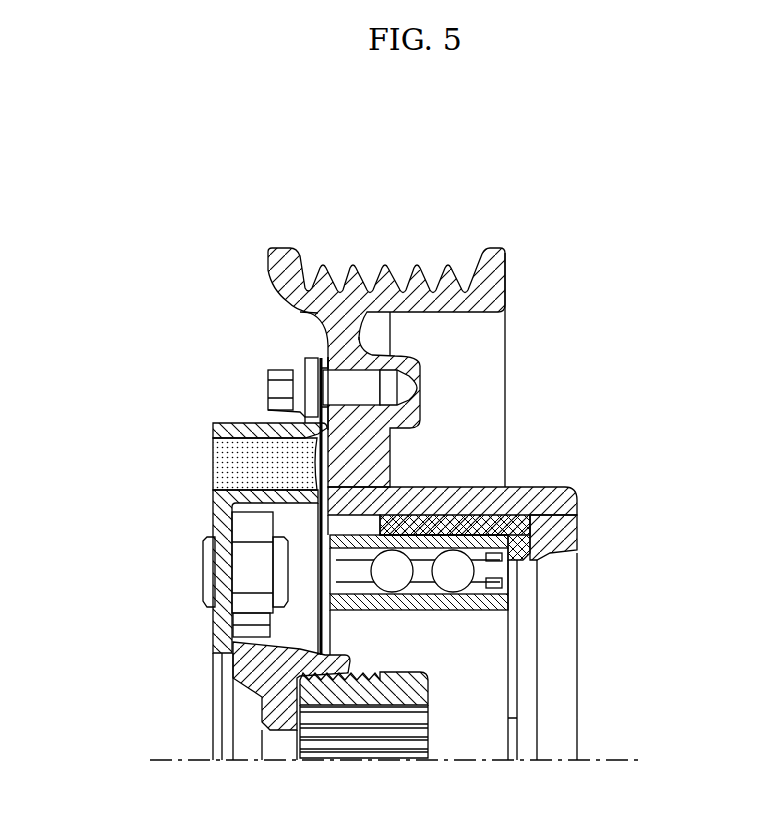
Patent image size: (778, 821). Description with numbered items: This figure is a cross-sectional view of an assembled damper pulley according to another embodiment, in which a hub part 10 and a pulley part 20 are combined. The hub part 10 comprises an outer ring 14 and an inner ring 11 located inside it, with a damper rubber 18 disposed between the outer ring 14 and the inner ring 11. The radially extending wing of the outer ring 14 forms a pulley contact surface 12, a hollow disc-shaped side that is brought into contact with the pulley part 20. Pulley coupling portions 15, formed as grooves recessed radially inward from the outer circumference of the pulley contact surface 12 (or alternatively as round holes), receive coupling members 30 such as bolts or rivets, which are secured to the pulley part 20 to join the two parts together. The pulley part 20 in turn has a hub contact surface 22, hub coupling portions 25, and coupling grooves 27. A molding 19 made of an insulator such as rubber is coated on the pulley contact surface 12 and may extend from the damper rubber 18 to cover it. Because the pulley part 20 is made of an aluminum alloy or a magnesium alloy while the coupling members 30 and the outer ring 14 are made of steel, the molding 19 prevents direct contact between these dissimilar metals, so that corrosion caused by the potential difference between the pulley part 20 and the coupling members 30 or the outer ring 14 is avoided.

The hub part 10 is at (152, 523).
The inner ring 11 is at (213, 523).
The pulley contact surface 12 is at (315, 393).
The outer ring 14 is at (213, 428).
The pulley coupling portions 15 is at (318, 380).
The damper rubber 18 is at (213, 465).
The molding 19 is at (330, 360).
The pulley part 20 is at (405, 258).
The hub contact surface 22 is at (338, 398).
The hub coupling portions 25 is at (333, 366).
The coupling grooves 27 is at (405, 380).
The coupling members 30 is at (293, 378).